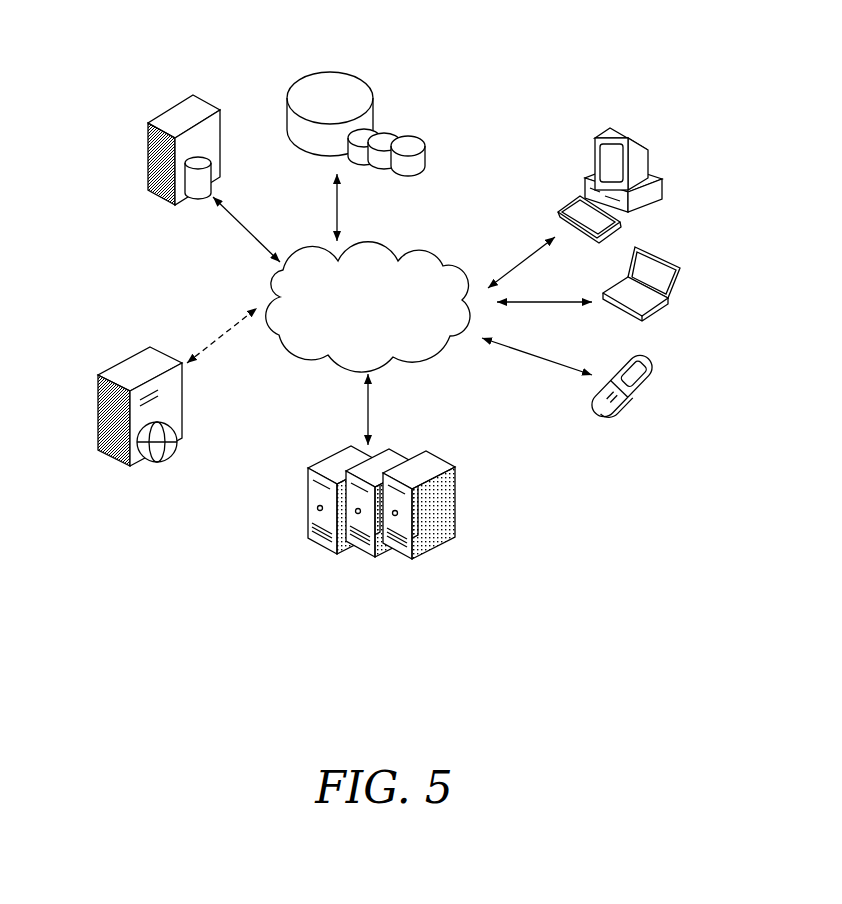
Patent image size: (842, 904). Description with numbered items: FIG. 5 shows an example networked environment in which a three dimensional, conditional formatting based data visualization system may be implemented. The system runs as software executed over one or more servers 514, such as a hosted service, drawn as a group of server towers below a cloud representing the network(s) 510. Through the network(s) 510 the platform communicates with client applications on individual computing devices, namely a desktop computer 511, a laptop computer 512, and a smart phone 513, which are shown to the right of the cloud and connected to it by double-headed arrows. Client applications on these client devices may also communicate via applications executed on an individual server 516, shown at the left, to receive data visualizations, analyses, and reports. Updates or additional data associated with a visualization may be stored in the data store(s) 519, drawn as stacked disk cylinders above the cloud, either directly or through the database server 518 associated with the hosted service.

The network(s) 510 is at (376, 232).
The desktop computer 511 is at (649, 120).
The laptop computer 512 is at (683, 243).
The smart phone 513 is at (658, 355).
The servers 514 is at (332, 446).
The individual server 516 is at (116, 351).
The database server 518 is at (185, 209).
The data store(s) 519 is at (348, 46).